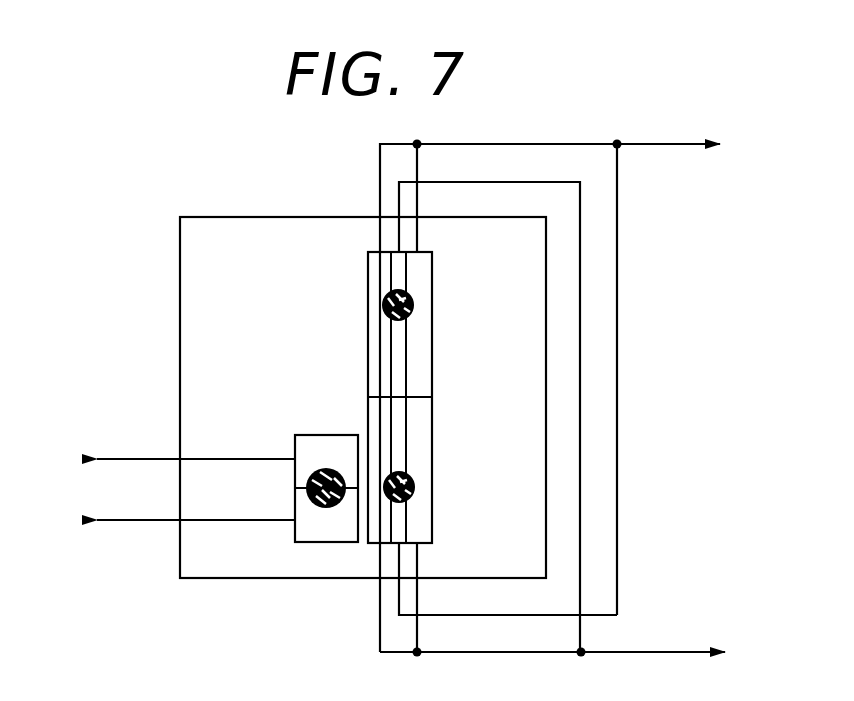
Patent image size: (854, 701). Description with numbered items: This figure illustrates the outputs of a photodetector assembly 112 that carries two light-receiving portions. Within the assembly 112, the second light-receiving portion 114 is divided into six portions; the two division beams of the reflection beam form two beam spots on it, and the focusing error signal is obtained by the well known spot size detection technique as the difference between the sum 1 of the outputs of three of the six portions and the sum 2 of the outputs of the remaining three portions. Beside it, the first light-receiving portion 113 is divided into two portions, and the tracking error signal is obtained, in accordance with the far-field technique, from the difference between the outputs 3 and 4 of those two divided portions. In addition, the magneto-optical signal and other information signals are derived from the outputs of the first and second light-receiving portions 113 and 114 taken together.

The sum of outputs 1 is at (570, 391).
The sum of outputs 2 is at (572, 424).
The output 3 is at (178, 461).
The output 4 is at (178, 522).
The photodetector assembly 112 is at (275, 217).
The first light-receiving portion 113 is at (293, 447).
The second light-receiving portion 114 is at (370, 373).